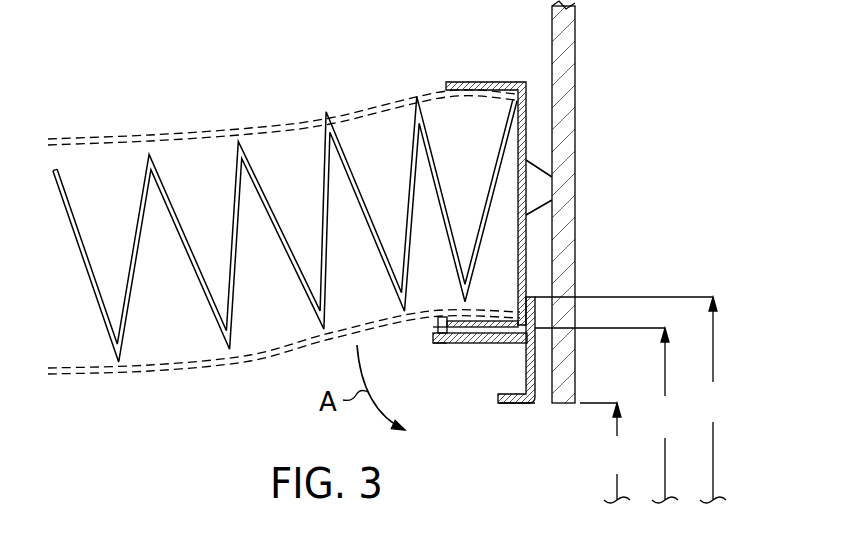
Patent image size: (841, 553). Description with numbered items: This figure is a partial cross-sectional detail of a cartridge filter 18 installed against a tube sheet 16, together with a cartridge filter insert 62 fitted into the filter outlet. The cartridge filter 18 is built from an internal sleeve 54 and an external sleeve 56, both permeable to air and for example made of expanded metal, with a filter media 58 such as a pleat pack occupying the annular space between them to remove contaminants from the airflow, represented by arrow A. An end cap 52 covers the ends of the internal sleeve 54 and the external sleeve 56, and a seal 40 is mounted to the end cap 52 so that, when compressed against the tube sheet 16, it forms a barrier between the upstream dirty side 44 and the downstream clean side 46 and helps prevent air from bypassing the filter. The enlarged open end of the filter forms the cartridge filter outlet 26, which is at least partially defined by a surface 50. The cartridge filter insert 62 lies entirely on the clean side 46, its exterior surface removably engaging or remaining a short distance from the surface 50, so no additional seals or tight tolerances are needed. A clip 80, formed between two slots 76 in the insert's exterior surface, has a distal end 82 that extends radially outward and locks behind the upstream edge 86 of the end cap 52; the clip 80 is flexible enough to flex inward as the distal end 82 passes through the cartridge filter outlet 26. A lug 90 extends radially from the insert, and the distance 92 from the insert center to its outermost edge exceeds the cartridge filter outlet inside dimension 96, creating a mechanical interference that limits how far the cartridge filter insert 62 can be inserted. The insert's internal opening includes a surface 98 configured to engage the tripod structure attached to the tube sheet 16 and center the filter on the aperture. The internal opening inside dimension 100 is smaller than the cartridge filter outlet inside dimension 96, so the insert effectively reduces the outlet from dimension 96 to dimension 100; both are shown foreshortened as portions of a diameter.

The tube sheet 16 is at (577, 70).
The cartridge filter 18 is at (125, 95).
The cartridge filter outlet 26 is at (435, 443).
The seal 40 is at (528, 207).
The dirty side 44 is at (283, 78).
The clean side 46 is at (251, 401).
The surface 50 is at (522, 350).
The end cap 52 is at (483, 82).
The internal sleeve 54 is at (82, 375).
The external sleeve 56 is at (218, 133).
The filter media 58 is at (83, 258).
The cartridge filter insert 62 is at (525, 378).
The slots 76 is at (433, 338).
The clip 80 is at (435, 327).
The distal end 82 is at (441, 316).
The upstream edge 86 is at (463, 318).
The lug 90 is at (535, 310).
The distance 92 is at (712, 400).
The cartridge filter outlet inside dimension 96 is at (608, 415).
The surface 98 is at (513, 407).
The internal opening inside dimension 100 is at (611, 453).